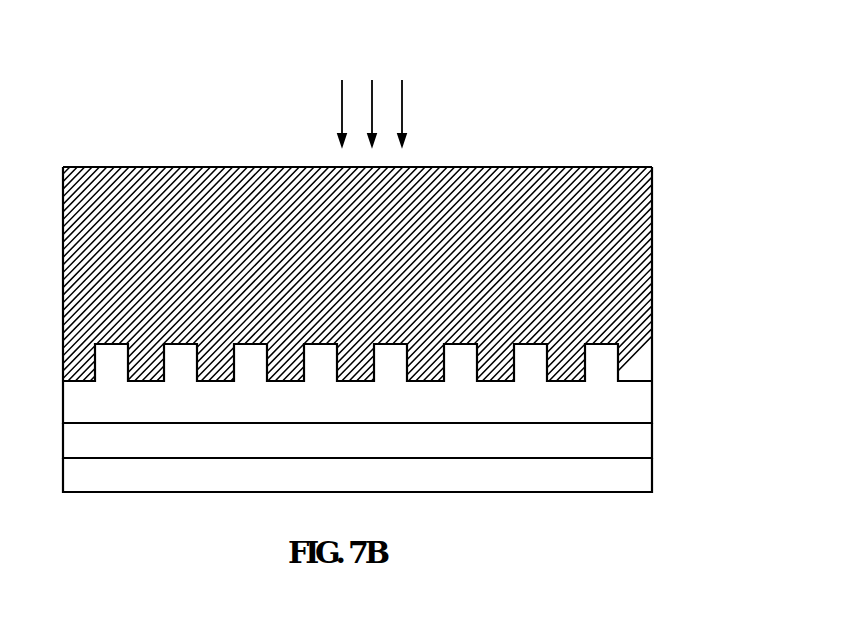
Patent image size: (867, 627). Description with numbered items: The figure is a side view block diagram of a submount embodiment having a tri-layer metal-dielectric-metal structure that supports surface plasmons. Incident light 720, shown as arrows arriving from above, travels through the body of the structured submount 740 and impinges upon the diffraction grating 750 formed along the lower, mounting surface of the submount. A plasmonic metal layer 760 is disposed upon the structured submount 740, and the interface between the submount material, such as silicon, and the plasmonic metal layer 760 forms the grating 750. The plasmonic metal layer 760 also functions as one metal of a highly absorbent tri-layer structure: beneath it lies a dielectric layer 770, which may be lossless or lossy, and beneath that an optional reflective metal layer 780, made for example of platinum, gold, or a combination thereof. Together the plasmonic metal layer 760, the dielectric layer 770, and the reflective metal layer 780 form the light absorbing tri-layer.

The incident light 720 is at (373, 70).
The submount 740 is at (625, 247).
The diffraction grating 750 is at (480, 352).
The plasmonic metal layer 760 is at (618, 403).
The dielectric layer 770 is at (635, 443).
The reflective metal layer 780 is at (632, 478).